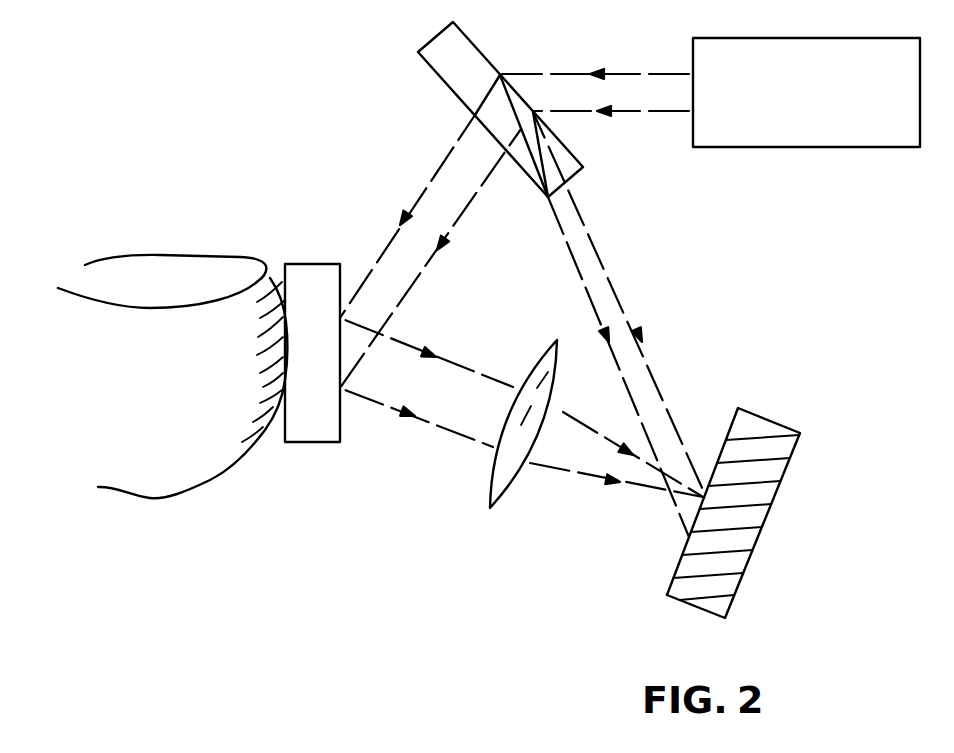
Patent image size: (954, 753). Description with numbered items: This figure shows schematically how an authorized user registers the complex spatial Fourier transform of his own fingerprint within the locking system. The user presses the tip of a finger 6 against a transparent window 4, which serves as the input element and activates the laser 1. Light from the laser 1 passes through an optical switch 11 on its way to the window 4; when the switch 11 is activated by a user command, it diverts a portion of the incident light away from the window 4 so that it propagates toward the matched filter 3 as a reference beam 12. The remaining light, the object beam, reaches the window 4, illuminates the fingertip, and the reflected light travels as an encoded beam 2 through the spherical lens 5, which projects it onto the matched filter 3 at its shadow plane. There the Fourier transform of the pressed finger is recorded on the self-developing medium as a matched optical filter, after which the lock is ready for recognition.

The laser 1 is at (808, 147).
The encoded beam 2 is at (430, 425).
The matched filter 3 is at (683, 598).
The transparent window 4 is at (322, 436).
The spherical lens 5 is at (502, 497).
The finger 6 is at (134, 403).
The optical switch 11 is at (572, 147).
The reference beam 12 is at (637, 377).